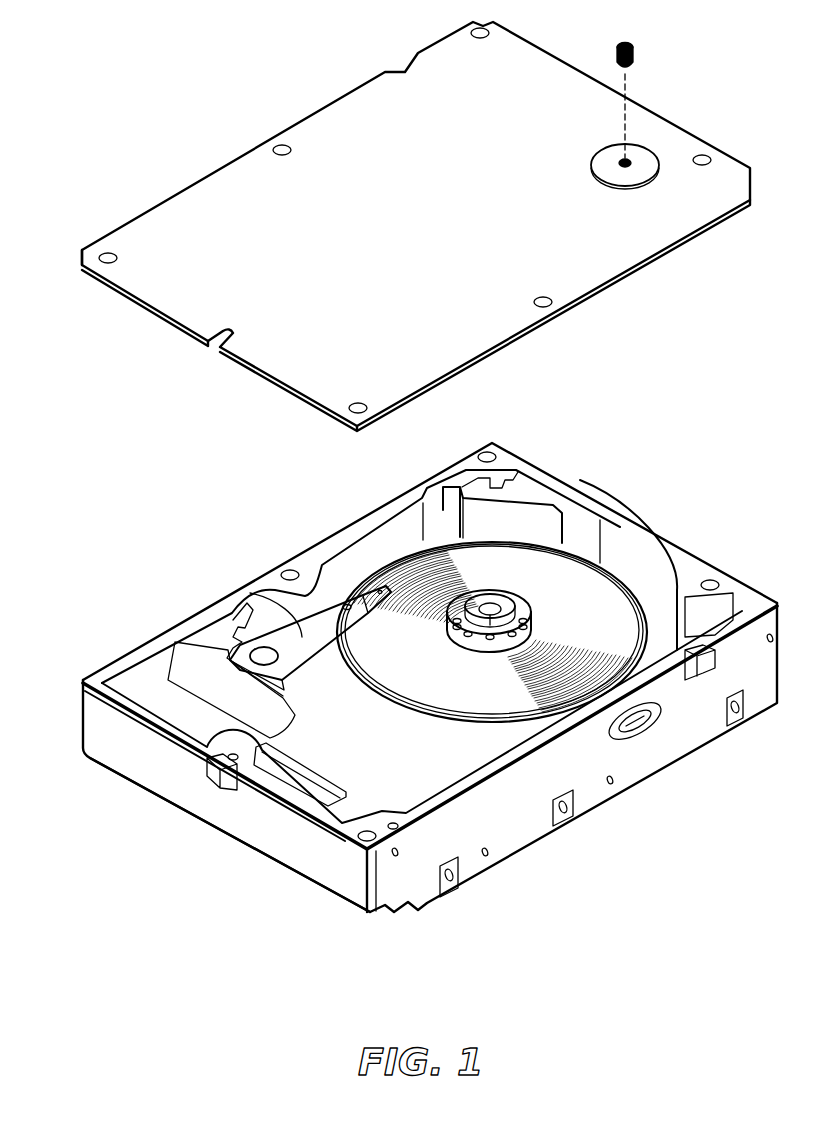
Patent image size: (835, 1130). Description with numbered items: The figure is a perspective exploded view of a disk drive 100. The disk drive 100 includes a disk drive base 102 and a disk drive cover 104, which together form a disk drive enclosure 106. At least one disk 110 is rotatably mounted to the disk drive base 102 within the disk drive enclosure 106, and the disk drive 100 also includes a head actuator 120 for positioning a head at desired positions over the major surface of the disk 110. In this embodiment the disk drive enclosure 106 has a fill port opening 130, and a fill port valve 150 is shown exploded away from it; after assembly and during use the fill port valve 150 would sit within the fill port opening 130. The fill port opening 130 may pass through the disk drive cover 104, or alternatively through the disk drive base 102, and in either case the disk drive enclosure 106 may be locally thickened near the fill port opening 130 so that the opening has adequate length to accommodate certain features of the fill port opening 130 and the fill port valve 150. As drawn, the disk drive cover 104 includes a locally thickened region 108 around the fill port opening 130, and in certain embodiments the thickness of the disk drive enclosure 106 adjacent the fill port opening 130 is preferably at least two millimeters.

The disk drive 100 is at (429, 529).
The disk drive base 102 is at (430, 701).
The disk drive cover 104 is at (426, 219).
The disk drive enclosure 106 is at (392, 793).
The locally thickened region 108 is at (631, 142).
The disk 110 is at (578, 585).
The head actuator 120 is at (263, 637).
The fill port opening 130 is at (623, 163).
The fill port valve 150 is at (640, 57).